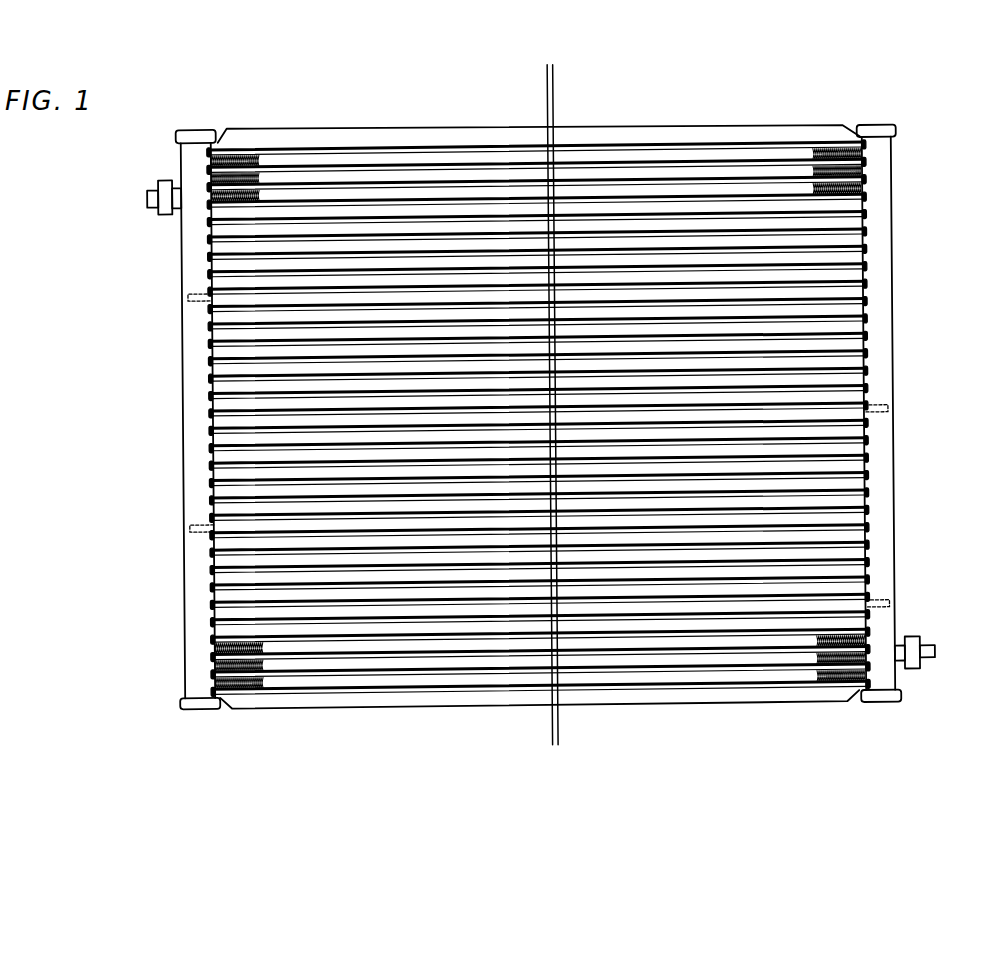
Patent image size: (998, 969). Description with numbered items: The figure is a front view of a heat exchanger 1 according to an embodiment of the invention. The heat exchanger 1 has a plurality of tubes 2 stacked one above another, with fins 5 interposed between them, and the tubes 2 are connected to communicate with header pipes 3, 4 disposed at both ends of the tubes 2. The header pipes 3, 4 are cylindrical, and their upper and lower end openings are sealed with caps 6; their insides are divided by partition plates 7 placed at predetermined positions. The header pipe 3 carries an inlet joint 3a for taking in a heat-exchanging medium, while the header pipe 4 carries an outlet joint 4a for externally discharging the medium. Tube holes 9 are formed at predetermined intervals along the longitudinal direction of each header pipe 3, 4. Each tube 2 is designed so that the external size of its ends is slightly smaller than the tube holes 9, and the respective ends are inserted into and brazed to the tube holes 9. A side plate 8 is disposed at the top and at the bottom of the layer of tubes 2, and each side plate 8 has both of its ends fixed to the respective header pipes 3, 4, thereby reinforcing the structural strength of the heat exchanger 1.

The heat exchanger 1 is at (758, 122).
The tubes 2 is at (438, 200).
The header pipe 3 is at (182, 362).
The inlet joint 3a is at (148, 200).
The header pipe 4 is at (893, 298).
The outlet joint 4a is at (935, 652).
The fins 5 is at (262, 188).
The caps 6 is at (180, 130).
The partition plates 7 is at (190, 298).
The side plate 8 is at (661, 130).
The tube holes 9 is at (210, 429).